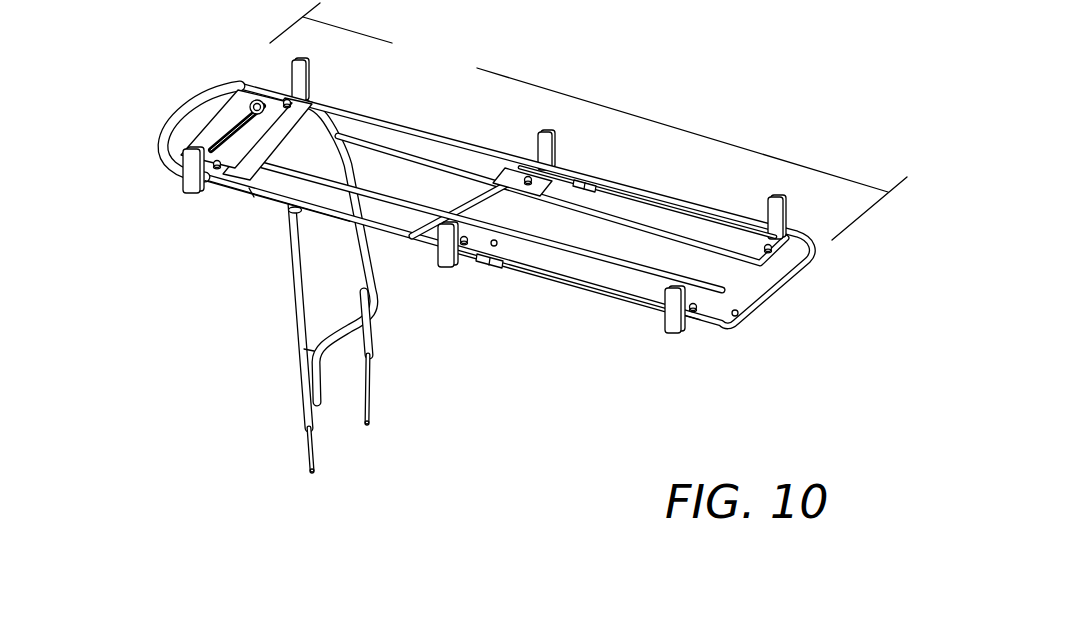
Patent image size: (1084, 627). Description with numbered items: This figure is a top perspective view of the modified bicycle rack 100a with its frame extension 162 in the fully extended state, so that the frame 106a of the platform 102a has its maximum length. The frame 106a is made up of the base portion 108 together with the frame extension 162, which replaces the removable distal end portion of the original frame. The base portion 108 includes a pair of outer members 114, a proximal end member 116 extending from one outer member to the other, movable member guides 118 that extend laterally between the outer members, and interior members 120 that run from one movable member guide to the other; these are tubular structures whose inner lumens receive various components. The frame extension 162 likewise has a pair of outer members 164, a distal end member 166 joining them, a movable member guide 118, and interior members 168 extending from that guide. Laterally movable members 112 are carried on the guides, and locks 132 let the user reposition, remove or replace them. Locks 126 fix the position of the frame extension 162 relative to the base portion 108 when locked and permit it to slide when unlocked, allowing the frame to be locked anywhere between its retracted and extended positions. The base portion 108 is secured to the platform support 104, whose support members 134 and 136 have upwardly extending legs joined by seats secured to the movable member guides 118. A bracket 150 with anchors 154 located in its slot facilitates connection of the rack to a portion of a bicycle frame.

The modified rack 100a is at (497, 265).
The platform 102a is at (458, 225).
The platform support 104 is at (297, 291).
The modified frame 106a is at (574, 160).
The base portion 108 is at (232, 196).
The laterally movable members 112 is at (440, 259).
The outer members 114 is at (253, 197).
The proximal end member 116 is at (170, 128).
The movable member guides 118 is at (493, 240).
The interior members 120 is at (333, 163).
The locks 126 is at (482, 273).
The locks 132 is at (527, 177).
The support member 134 is at (300, 325).
The support member 136 is at (328, 380).
The bracket 150 is at (185, 153).
The anchors 154 is at (253, 103).
The frame extension 162 is at (838, 261).
The outer members 164 is at (642, 310).
The distal end member 166 is at (770, 298).
The interior members 168 is at (620, 270).